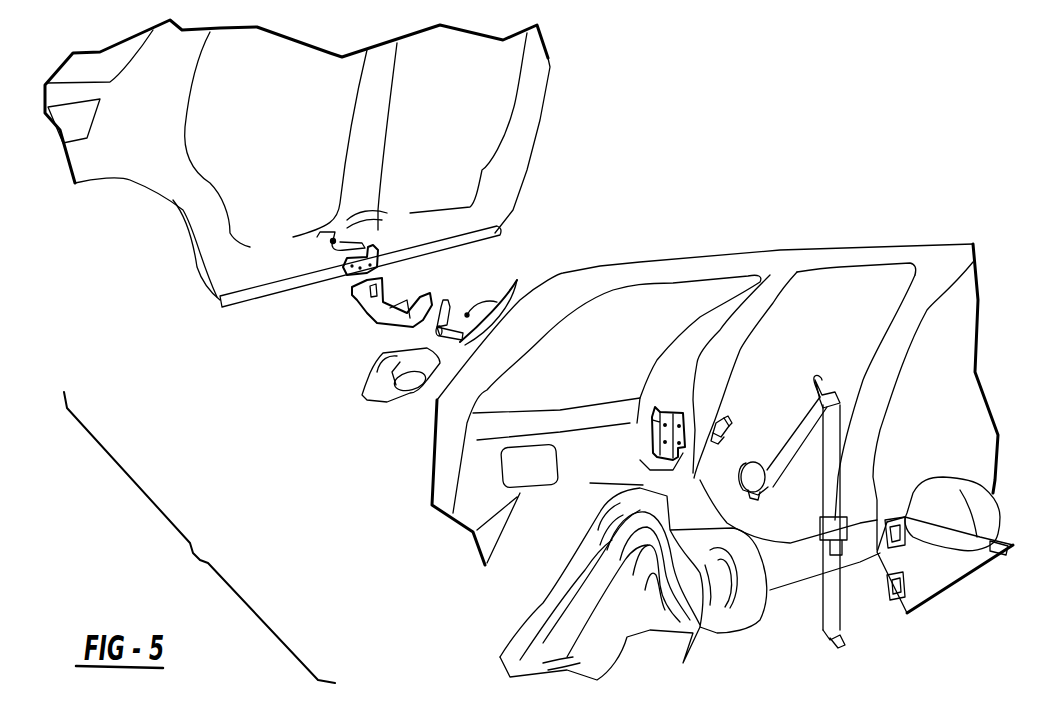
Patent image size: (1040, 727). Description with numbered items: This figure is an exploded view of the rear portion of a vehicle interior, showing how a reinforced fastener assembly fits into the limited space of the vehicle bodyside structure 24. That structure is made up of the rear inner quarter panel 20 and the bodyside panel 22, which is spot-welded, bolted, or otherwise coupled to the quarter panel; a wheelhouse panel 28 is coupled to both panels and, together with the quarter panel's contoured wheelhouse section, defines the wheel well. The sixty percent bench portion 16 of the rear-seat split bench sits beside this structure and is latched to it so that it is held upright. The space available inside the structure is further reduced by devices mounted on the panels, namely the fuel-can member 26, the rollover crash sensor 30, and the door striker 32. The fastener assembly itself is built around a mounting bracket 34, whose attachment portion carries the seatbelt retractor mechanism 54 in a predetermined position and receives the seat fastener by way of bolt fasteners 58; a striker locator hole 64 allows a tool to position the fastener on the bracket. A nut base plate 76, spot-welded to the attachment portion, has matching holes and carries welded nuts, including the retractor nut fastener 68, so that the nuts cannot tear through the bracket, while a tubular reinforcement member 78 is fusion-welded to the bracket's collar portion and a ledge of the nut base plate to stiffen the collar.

The 60% bench portion 16 is at (933, 573).
The rear inner quarter panel 20 is at (453, 530).
The bodyside panel 22 is at (550, 60).
The vehicle bodyside structure 24 is at (199, 537).
The fuel-can member 26 is at (372, 402).
The wheelhouse panel 28 is at (500, 652).
The rollover crash sensor 30 is at (727, 427).
The door striker 32 is at (650, 427).
The mounting bracket 34 is at (363, 318).
The seatbelt retractor mechanism 54 is at (467, 315).
The bolt fasteners 58 is at (517, 280).
The striker locator hole 64 is at (378, 217).
The retractor nut fastener 68 is at (333, 238).
The nut base plate 76 is at (378, 260).
The tubular reinforcement member 78 is at (317, 237).